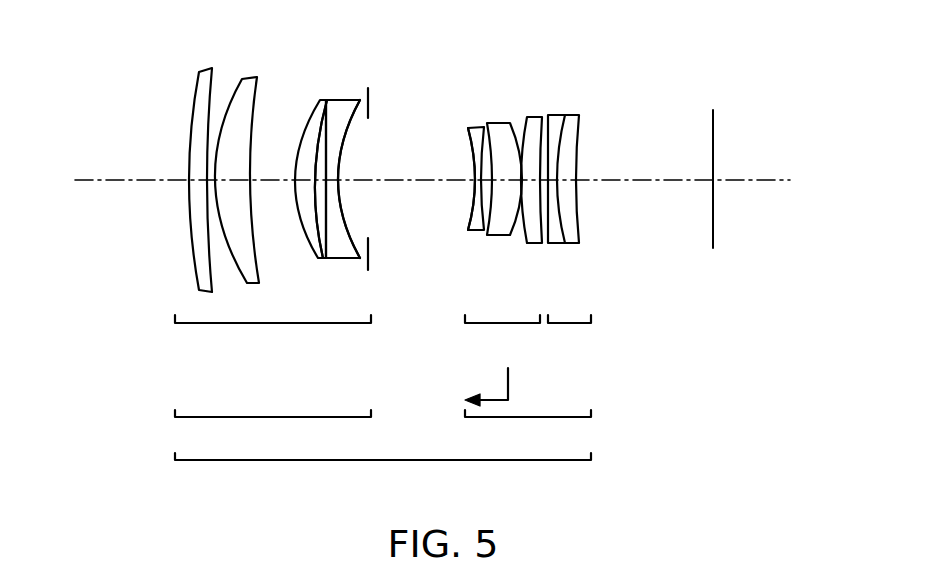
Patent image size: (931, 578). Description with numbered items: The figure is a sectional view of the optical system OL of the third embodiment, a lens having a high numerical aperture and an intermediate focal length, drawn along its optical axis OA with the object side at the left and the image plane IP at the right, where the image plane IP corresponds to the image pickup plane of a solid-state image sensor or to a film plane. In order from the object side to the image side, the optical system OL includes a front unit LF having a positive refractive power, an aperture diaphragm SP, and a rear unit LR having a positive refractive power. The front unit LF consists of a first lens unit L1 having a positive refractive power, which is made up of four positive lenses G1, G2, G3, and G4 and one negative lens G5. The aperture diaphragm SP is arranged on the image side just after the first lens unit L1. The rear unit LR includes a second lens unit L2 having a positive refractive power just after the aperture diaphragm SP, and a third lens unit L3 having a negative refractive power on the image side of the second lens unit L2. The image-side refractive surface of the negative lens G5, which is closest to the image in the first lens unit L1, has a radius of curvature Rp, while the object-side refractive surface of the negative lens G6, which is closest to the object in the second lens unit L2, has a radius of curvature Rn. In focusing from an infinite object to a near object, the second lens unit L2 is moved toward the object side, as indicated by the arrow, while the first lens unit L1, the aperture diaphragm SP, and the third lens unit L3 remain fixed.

The positive lens G1 is at (200, 80).
The positive lens G2 is at (246, 80).
The positive lens G3 is at (317, 100).
The positive lens G4 is at (335, 106).
The negative lens G5 is at (371, 147).
The negative lens G6 is at (448, 150).
The aperture diaphragm SP is at (370, 108).
The radius of curvature Rp is at (347, 140).
The radius of curvature Rn is at (470, 208).
The optical axis OA is at (618, 178).
The image plane IP is at (713, 140).
The first lens unit L1 is at (273, 334).
The second lens unit L2 is at (503, 235).
The third lens unit L3 is at (569, 234).
The front unit LF is at (273, 429).
The rear unit LR is at (528, 408).
The optical system OL is at (383, 473).